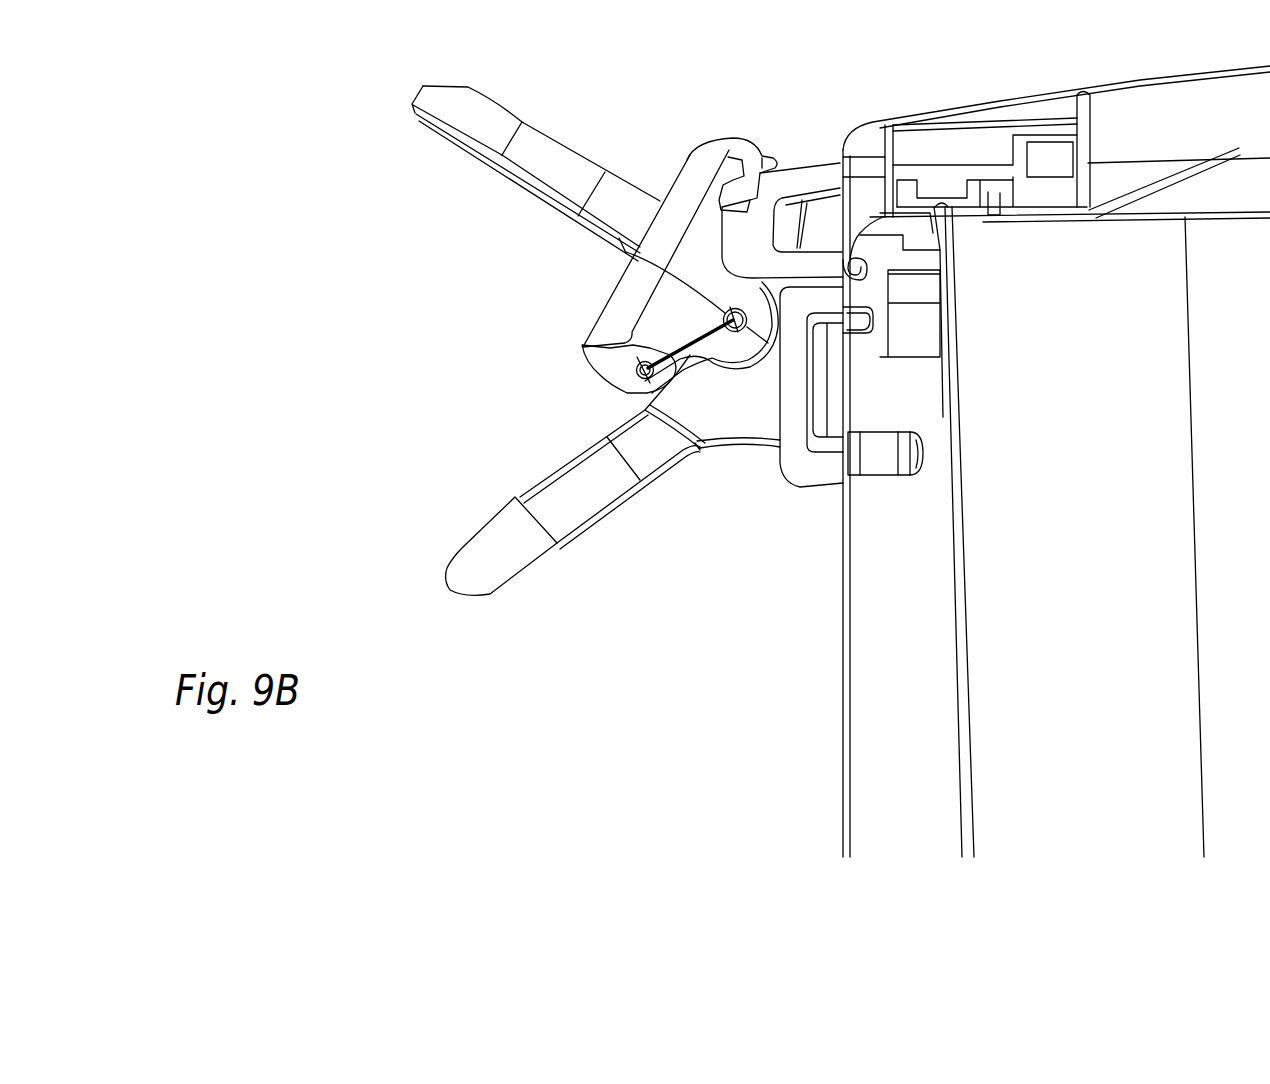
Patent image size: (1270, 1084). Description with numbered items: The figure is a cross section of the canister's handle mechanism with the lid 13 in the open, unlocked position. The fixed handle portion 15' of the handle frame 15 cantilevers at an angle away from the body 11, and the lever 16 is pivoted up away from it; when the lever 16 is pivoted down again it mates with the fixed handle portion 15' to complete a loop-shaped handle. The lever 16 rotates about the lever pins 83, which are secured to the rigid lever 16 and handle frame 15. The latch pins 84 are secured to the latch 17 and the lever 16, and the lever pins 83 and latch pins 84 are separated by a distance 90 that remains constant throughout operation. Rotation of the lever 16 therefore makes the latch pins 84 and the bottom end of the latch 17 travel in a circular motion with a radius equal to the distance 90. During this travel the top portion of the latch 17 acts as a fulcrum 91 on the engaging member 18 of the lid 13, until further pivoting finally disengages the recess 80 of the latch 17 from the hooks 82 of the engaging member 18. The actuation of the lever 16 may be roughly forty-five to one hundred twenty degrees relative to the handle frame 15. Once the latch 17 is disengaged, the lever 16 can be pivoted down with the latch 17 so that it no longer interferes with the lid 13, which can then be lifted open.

The body 11 is at (845, 707).
The lid 13 is at (950, 103).
The handle frame 15 is at (815, 436).
The fixed handle portion 15' is at (529, 475).
The lever 16 is at (463, 127).
The latch 17 is at (617, 297).
The engaging member 18 is at (810, 180).
The recess 80 is at (723, 140).
The hooks 82 is at (687, 160).
The lever pins 83 is at (630, 253).
The latch pins 84 is at (637, 366).
The distance 90 is at (582, 347).
The fulcrum 91 is at (760, 170).